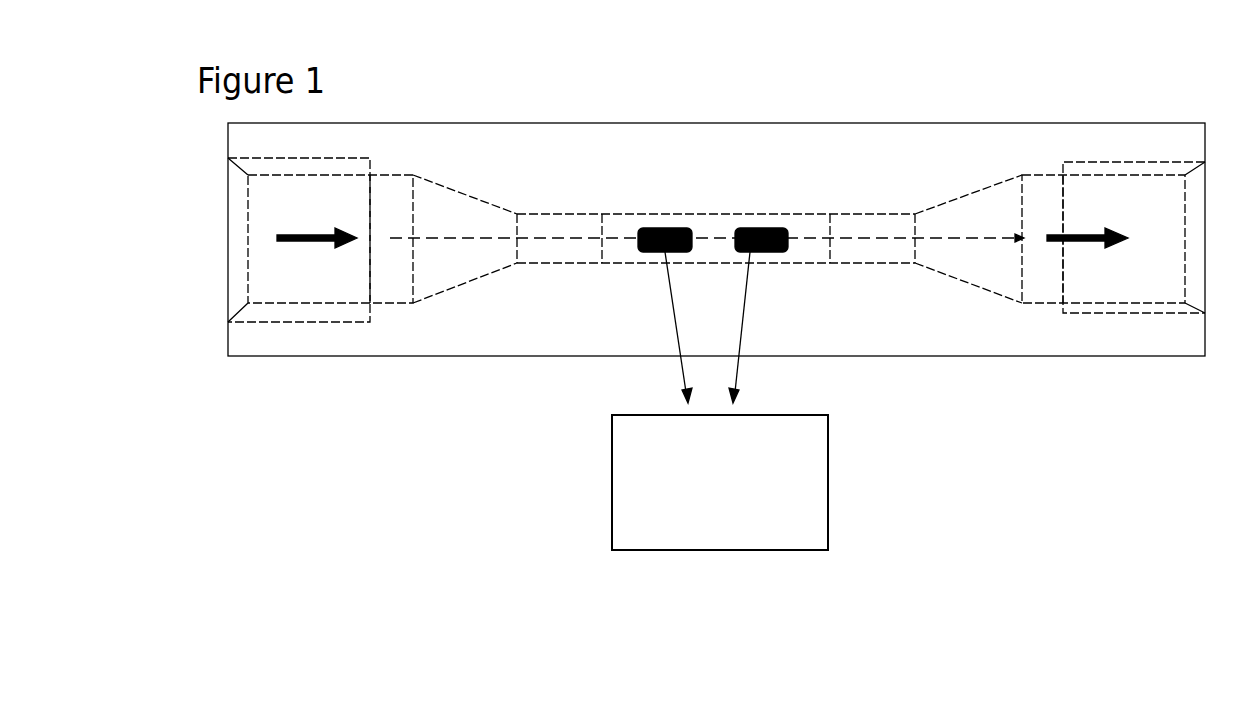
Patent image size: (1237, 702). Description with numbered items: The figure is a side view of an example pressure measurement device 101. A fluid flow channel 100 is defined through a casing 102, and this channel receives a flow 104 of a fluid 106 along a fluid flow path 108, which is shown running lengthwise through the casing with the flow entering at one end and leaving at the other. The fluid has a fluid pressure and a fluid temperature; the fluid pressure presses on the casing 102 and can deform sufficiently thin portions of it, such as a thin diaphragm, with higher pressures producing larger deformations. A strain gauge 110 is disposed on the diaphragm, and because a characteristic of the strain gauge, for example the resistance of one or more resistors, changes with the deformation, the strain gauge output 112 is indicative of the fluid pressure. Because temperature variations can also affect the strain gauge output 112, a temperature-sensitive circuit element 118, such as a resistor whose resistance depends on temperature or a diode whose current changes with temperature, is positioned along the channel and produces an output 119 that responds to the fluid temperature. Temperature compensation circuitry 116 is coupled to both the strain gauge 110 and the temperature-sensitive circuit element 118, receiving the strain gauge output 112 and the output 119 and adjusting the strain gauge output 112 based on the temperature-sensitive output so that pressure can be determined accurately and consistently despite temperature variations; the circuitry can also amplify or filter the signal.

The fluid flow channel 100 is at (585, 225).
The pressure measurement device 101 is at (970, 413).
The casing 102 is at (710, 132).
The flow 104 is at (290, 234).
The fluid 106 is at (855, 228).
The fluid flow path 108 is at (437, 239).
The strain gauge 110 is at (658, 253).
The strain gauge output 112 is at (677, 362).
The temperature compensation circuitry 116 is at (829, 438).
The temperature-sensitive circuit element 118 is at (763, 253).
The output of the temperature-sensitive circuit element 119 is at (745, 322).